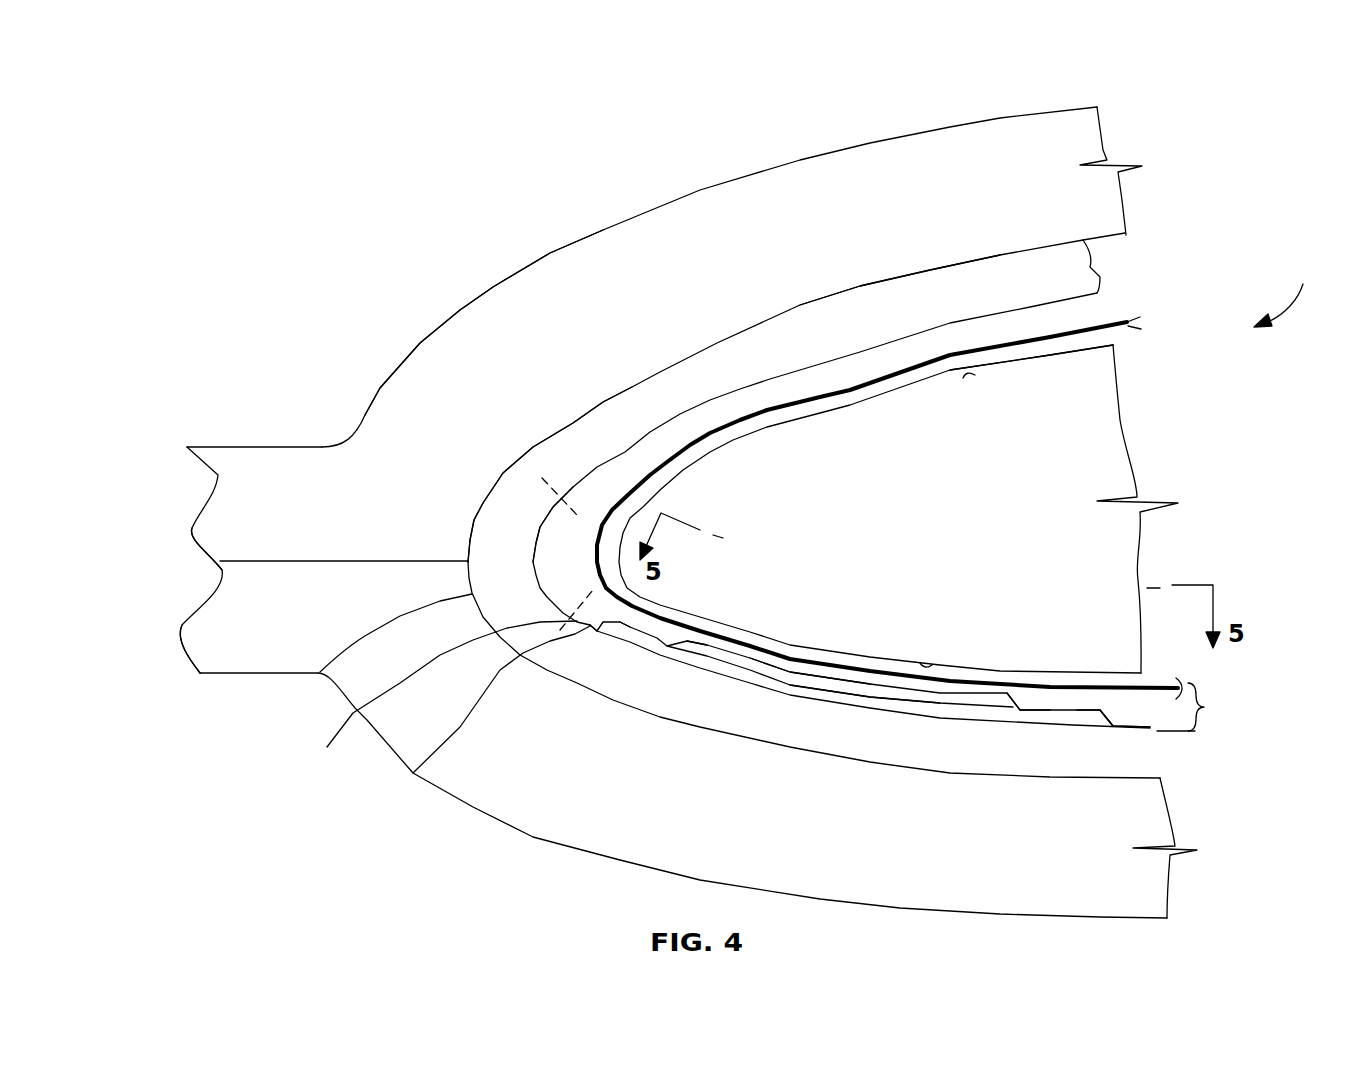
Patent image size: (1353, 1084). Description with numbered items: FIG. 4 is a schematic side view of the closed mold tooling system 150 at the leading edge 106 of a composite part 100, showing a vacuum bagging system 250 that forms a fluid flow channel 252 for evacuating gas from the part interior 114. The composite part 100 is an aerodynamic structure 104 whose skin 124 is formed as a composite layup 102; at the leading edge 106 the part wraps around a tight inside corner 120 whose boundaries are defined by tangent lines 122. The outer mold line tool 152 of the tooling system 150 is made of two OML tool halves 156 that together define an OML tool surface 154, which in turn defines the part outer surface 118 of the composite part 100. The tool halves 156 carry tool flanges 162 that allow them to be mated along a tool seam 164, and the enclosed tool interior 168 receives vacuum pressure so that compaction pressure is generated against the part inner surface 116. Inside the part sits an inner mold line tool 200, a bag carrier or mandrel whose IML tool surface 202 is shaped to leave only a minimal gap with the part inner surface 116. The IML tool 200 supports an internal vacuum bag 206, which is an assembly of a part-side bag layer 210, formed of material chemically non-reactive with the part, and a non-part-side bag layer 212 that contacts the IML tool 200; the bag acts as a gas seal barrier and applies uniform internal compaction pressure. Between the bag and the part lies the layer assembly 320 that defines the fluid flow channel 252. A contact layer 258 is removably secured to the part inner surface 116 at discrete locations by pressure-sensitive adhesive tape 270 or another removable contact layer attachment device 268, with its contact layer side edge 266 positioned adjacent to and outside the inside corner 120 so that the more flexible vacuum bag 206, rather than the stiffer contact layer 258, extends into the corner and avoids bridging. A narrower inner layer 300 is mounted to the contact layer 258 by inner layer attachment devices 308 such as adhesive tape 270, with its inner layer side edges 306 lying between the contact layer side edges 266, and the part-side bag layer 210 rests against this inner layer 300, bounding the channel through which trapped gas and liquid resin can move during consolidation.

The composite part 100 is at (652, 400).
The composite layup 102 is at (717, 343).
The aerodynamic structure 104 is at (550, 445).
The leading edge 106 is at (492, 497).
The part interior 114 is at (806, 386).
The part inner surface 116 is at (907, 336).
The part outer surface 118 is at (862, 288).
The inside corner 120 is at (530, 558).
The tangent line 122 is at (430, 697).
The skin 124 is at (997, 273).
The closed mold tooling system 150 is at (232, 445).
The outer mold line tool 152 is at (472, 806).
The OML tool surface 154 is at (325, 676).
The OML tool half 156 is at (218, 477).
The tool flange 162 is at (192, 529).
The tool seam 164 is at (213, 561).
The tool interior 168 is at (413, 773).
The inner mold line tool 200 is at (906, 527).
The IML tool surface 202 is at (963, 378).
The internal vacuum bag 206 is at (1125, 342).
The part-side bag layer 210 is at (1135, 315).
The non-part-side bag layer 212 is at (1142, 328).
The vacuum bagging system 250 is at (1284, 291).
The fluid flow channel 252 is at (802, 676).
The contact layer 258 is at (857, 697).
The contact layer side edge 266 is at (585, 650).
The contact layer attachment device 268 is at (575, 682).
The adhesive tape 270 is at (593, 640).
The inner layer 300 is at (763, 675).
The inner layer side edge 306 is at (673, 655).
The inner layer attachment device 308 is at (660, 660).
The layer assembly 320 is at (1221, 707).